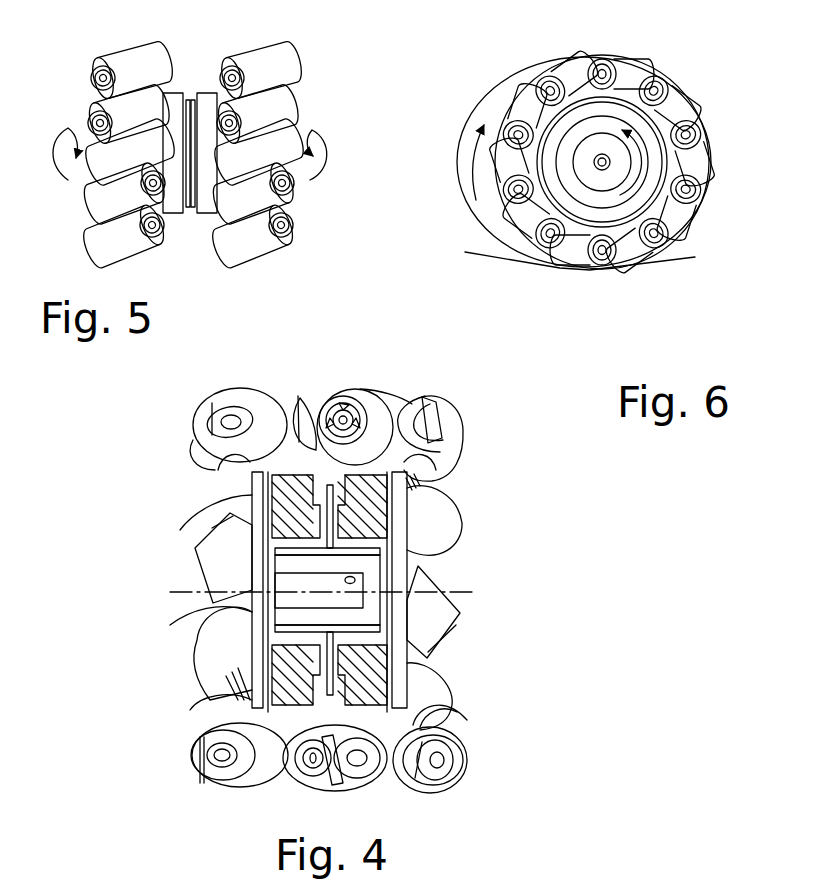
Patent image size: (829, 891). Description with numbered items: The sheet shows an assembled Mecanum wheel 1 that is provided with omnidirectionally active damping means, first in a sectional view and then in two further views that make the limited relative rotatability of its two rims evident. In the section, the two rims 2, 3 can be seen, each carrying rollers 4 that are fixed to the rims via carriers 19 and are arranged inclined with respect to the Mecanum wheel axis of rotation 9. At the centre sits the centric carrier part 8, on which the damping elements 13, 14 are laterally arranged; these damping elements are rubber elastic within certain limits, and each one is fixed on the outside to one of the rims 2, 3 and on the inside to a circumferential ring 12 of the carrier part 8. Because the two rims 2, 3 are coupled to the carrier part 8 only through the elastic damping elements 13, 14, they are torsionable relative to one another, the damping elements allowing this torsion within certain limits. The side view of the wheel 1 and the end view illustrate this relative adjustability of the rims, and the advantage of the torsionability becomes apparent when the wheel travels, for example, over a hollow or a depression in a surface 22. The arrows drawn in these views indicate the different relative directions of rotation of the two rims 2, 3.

In FIG. 5, the Mecanum wheel 1 is at (318, 83).
In FIG. 4, the Mecanum wheel 1 is at (550, 612).
In FIG. 5, the rim 2 is at (100, 187).
In FIG. 4, the rim 2 is at (267, 492).
In FIG. 5, the rim 3 is at (273, 132).
In FIG. 4, the rim 3 is at (390, 493).
In FIG. 4, the roller 4 is at (272, 400).
In FIG. 4, the carrier part 8 is at (383, 620).
In FIG. 4, the axis of rotation 9 is at (460, 593).
In FIG. 4, the circumferential ring 12 is at (392, 768).
In FIG. 5, the damping element 13 is at (170, 202).
In FIG. 4, the damping element 13 is at (270, 668).
In FIG. 5, the damping element 14 is at (213, 105).
In FIG. 4, the damping element 14 is at (452, 710).
In FIG. 4, the carrier 19 is at (272, 458).
In FIG. 6, the surface 22 is at (578, 272).